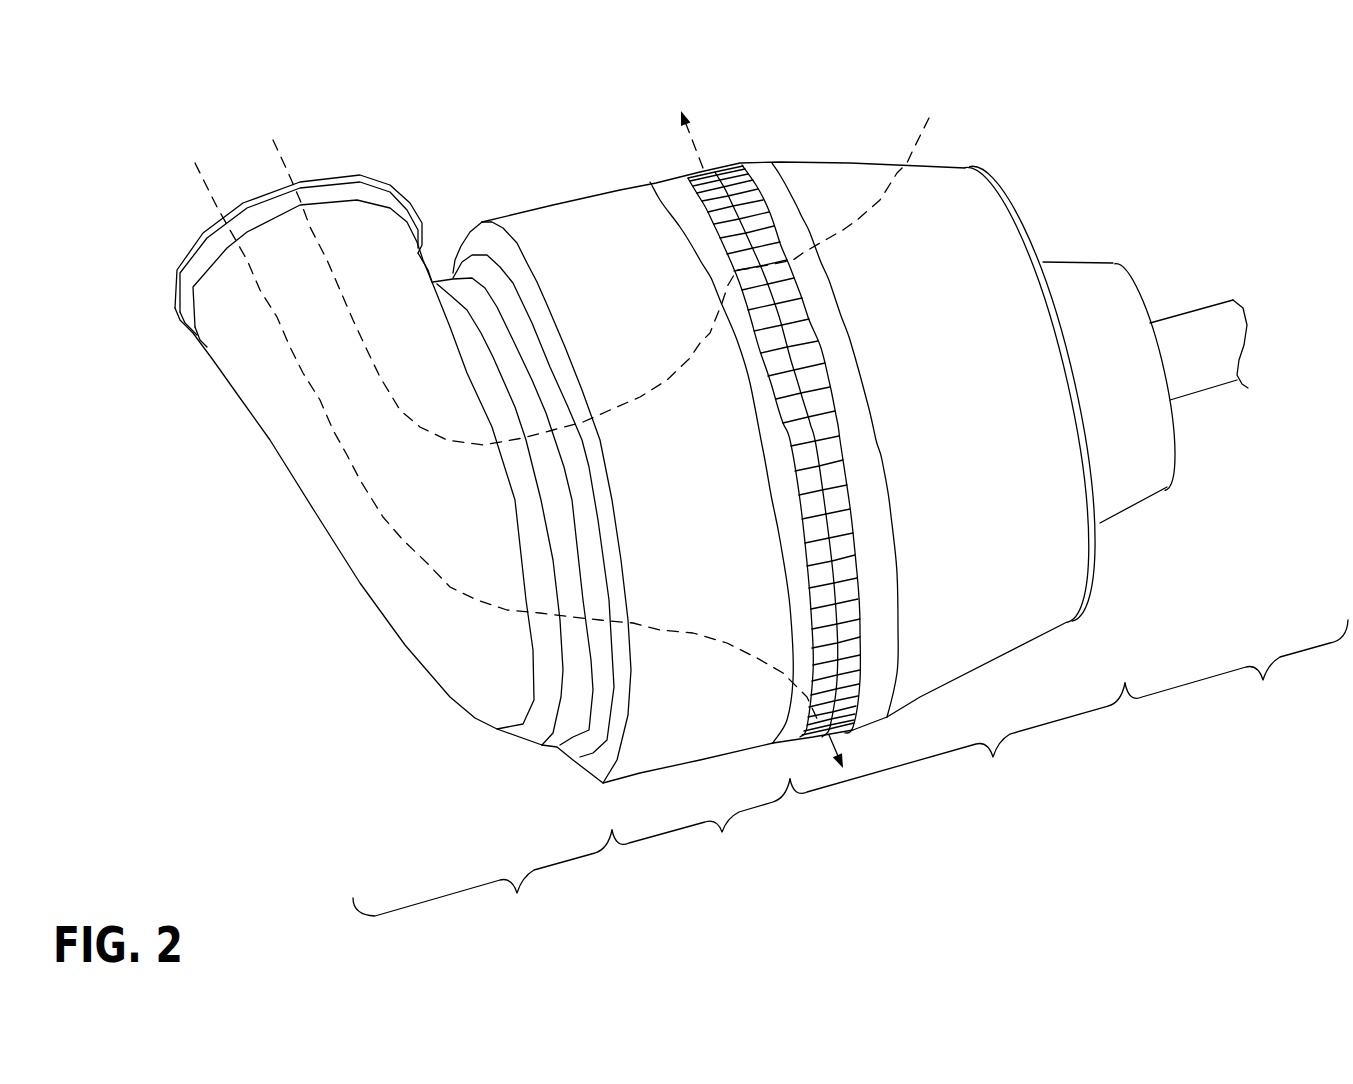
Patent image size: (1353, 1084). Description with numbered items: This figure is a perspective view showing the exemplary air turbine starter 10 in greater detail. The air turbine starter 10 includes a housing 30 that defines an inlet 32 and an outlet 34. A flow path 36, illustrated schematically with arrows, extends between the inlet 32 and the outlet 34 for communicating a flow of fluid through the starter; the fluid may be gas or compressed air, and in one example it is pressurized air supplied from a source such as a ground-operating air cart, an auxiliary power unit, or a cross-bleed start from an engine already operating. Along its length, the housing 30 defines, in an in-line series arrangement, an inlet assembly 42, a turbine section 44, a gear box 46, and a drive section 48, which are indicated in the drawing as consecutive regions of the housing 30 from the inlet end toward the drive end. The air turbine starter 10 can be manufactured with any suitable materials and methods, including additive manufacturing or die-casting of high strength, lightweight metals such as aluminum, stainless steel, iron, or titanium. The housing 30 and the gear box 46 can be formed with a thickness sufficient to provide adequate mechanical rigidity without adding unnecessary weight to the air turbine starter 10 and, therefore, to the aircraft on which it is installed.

The air turbine starter 10 is at (1084, 83).
The housing 30 is at (555, 199).
The inlet 32 is at (377, 174).
The outlet 34 is at (758, 171).
The flow path 36 is at (423, 793).
The inlet assembly 42 is at (482, 876).
The turbine section 44 is at (701, 819).
The gear box 46 is at (990, 525).
The drive section 48 is at (1236, 504).